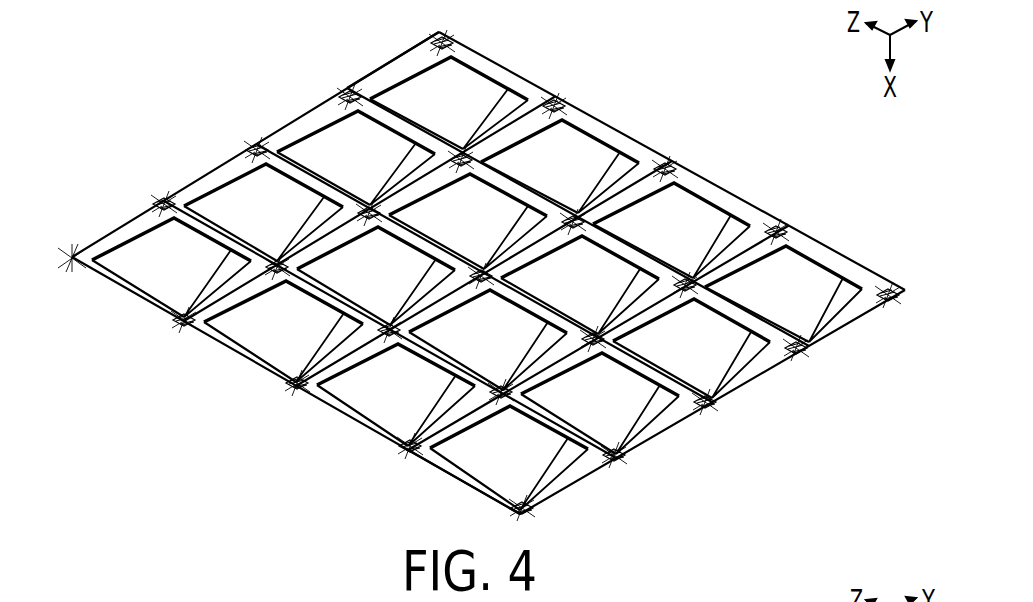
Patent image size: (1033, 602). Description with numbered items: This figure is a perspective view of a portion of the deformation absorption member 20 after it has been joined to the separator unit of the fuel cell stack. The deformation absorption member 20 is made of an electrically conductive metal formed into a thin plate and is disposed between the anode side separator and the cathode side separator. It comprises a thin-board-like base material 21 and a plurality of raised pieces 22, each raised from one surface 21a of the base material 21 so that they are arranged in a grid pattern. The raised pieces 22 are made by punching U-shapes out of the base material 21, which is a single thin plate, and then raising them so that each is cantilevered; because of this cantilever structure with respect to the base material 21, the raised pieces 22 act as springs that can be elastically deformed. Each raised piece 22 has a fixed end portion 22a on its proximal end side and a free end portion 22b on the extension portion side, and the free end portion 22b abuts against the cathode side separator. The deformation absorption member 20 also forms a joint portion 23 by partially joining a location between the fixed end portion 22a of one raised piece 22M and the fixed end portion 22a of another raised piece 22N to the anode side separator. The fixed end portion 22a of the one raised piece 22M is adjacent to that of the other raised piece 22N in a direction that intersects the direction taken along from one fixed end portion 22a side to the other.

The deformation absorption member 20 is at (59, 37).
The base material 21 is at (488, 284).
The one surface of the base material 21a is at (453, 477).
The raised piece 22 is at (715, 394).
The fixed end portion 22a is at (695, 393).
The free end portion 22b is at (818, 350).
The one raised piece 22M is at (698, 210).
The other raised piece 22N is at (587, 142).
The joint portion 23 is at (385, 82).